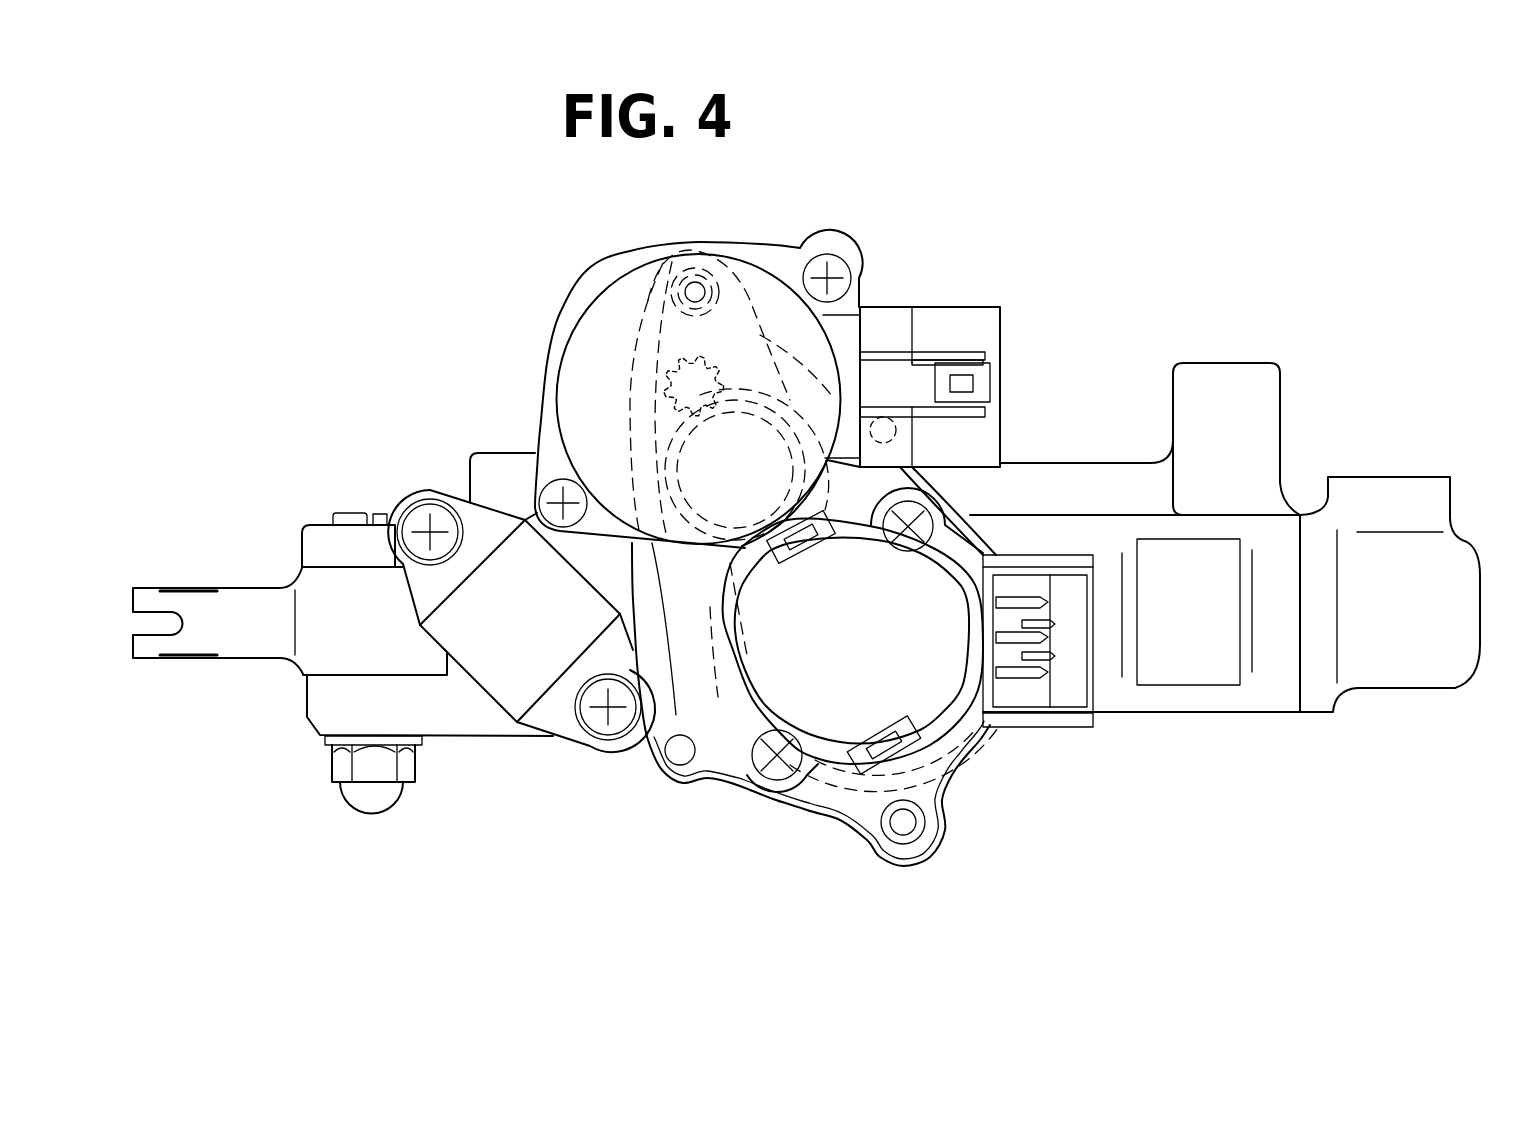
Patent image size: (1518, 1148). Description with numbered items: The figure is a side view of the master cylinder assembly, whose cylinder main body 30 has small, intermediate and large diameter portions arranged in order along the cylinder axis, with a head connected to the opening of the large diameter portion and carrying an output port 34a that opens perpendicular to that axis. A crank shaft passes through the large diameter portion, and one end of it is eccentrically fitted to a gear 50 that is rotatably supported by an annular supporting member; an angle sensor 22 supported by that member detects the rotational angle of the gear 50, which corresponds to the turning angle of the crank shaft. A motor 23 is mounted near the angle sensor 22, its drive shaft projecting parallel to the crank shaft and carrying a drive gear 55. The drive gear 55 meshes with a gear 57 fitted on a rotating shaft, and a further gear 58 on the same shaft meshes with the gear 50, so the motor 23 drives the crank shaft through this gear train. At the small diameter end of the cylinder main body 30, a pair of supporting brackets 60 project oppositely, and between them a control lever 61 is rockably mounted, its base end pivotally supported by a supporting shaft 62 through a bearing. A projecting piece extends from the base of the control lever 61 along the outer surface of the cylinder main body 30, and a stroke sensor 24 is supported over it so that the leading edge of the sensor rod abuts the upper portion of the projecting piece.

The angle sensor 22 is at (903, 707).
The motor 23 is at (563, 310).
The stroke sensor 24 is at (492, 702).
The cylinder main body 30 is at (1113, 714).
The output port 34a is at (1384, 476).
The gear 50 is at (718, 716).
The drive gear 55 is at (710, 365).
The gear 57 is at (767, 402).
The gear 58 is at (860, 393).
The supporting bracket 60 is at (302, 530).
The control lever 61 is at (230, 587).
The supporting shaft 62 is at (370, 808).